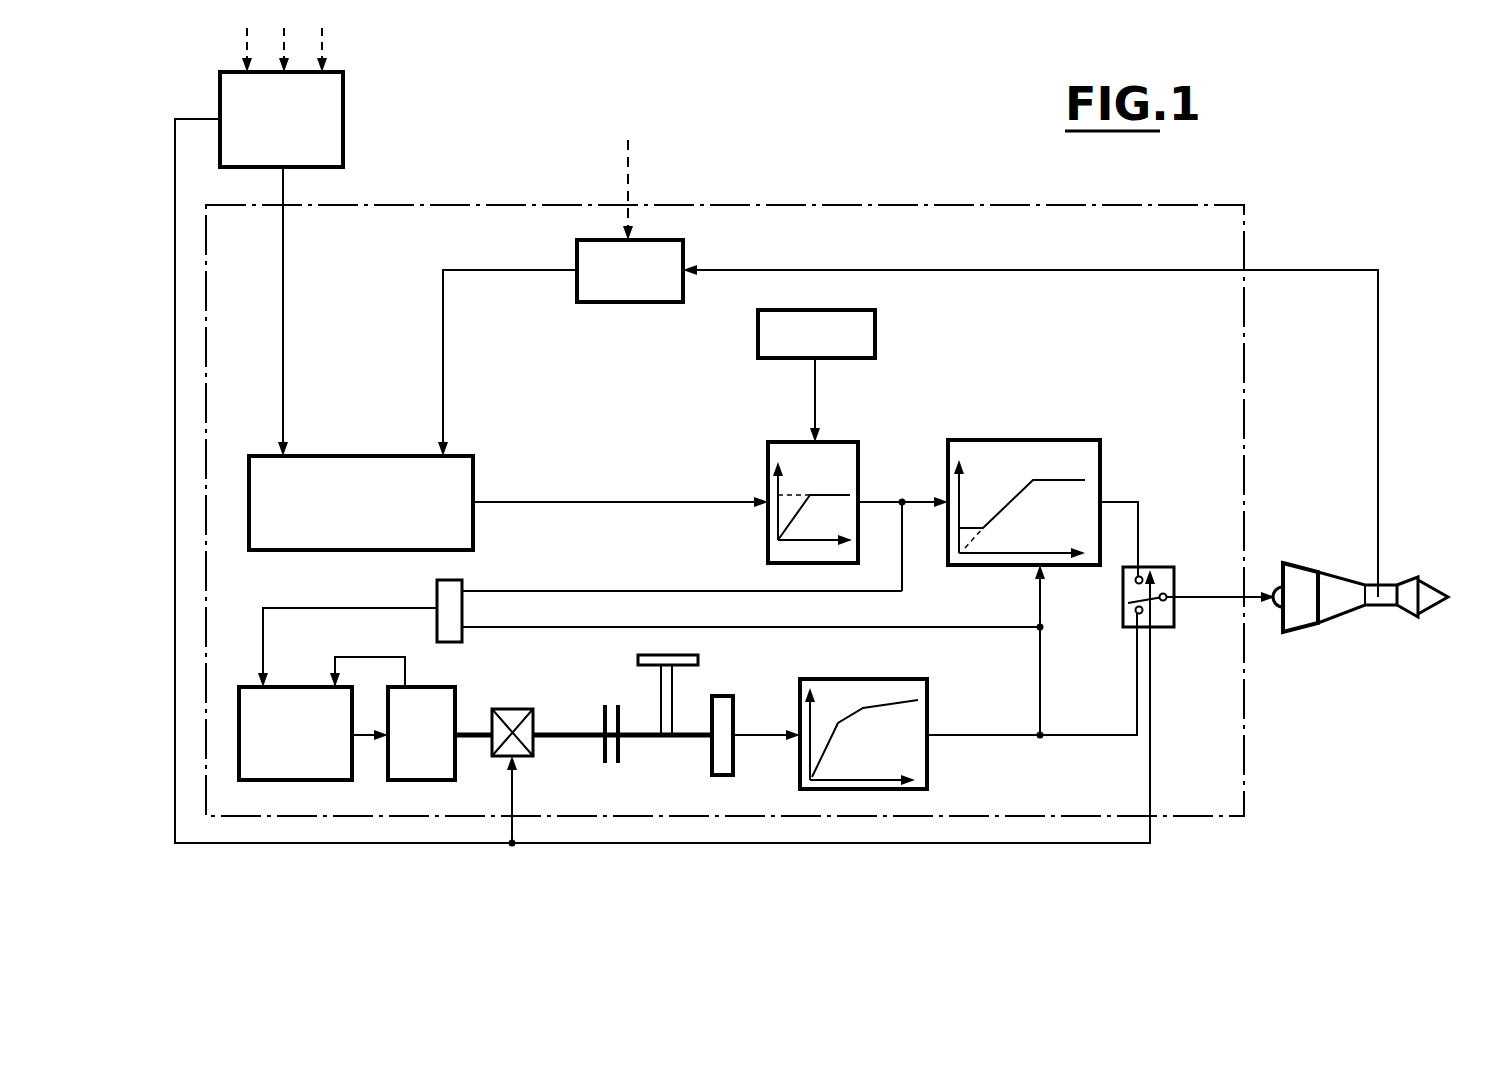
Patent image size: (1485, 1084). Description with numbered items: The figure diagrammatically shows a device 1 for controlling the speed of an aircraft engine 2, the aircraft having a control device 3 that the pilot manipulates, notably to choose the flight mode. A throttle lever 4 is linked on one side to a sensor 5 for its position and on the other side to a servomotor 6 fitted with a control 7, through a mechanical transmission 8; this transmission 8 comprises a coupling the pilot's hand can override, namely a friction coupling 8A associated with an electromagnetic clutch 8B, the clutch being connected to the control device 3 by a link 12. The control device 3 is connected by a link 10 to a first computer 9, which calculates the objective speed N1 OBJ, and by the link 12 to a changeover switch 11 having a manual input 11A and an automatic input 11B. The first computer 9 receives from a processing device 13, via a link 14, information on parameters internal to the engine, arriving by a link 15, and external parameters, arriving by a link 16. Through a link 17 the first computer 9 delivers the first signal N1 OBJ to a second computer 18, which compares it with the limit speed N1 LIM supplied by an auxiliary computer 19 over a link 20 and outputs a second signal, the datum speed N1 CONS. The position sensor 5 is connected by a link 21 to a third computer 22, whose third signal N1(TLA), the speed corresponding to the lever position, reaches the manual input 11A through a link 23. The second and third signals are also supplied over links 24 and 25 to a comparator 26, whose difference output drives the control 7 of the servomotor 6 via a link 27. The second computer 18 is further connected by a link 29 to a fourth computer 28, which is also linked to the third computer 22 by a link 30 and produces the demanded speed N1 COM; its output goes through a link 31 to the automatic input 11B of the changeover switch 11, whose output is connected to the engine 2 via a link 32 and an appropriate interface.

The device 1 is at (857, 193).
The aircraft engine 2 is at (1335, 580).
The control device 3 is at (330, 130).
The throttle lever 4 is at (690, 661).
The sensor 5 is at (726, 712).
The servomotor 6 is at (450, 697).
The control 7 is at (292, 700).
The mechanical transmission 8 is at (570, 716).
The friction coupling 8A is at (620, 745).
The electromagnetic clutch 8B is at (520, 755).
The first computer 9 is at (363, 462).
The link 10 is at (283, 338).
The changeover switch 11 is at (1136, 625).
The manual input 11A is at (1134, 613).
The automatic input 11B is at (1133, 583).
The link 12 is at (612, 843).
The processing device 13 is at (600, 285).
The link 14 is at (443, 350).
The link 15 is at (968, 270).
The link 16 is at (628, 188).
The link 17 is at (616, 500).
The second computer 18 is at (768, 452).
The auxiliary computer 19 is at (860, 340).
The link 20 is at (812, 402).
The link 21 is at (760, 740).
The third computer 22 is at (900, 686).
The link 23 is at (1083, 738).
The link 24 is at (636, 590).
The link 25 is at (965, 626).
The comparator 26 is at (462, 585).
The link 27 is at (330, 607).
The fourth computer 28 is at (1035, 447).
The link 29 is at (915, 508).
The link 30 is at (1039, 602).
The link 31 is at (1130, 488).
The link 32 is at (1207, 596).